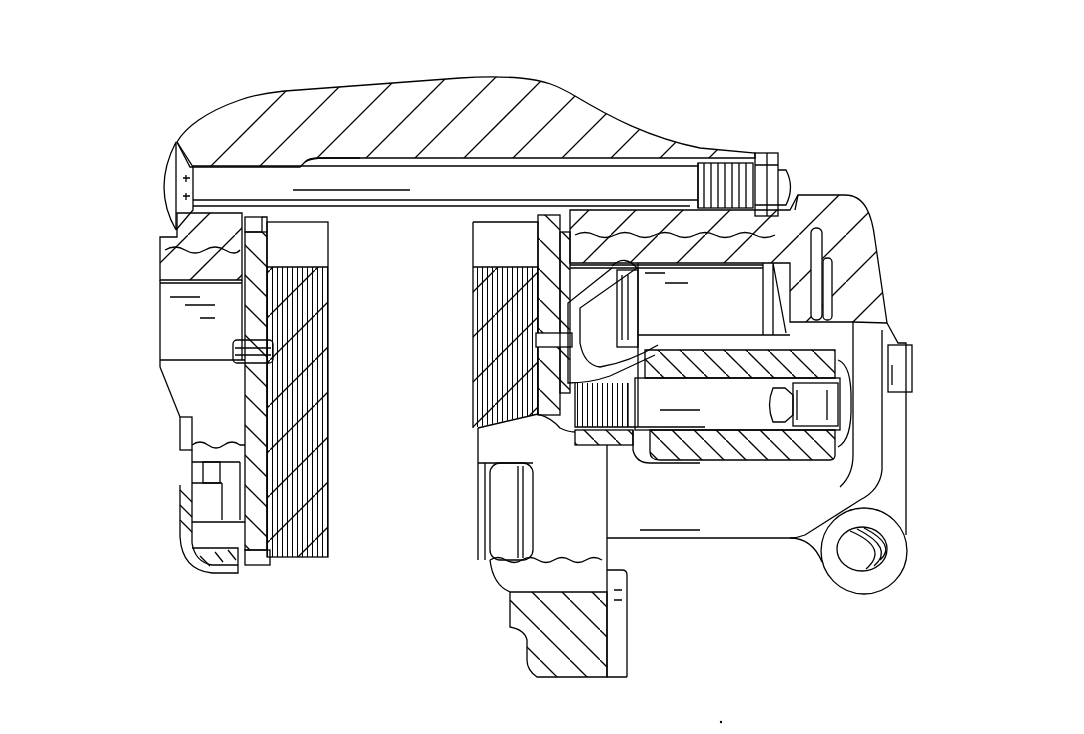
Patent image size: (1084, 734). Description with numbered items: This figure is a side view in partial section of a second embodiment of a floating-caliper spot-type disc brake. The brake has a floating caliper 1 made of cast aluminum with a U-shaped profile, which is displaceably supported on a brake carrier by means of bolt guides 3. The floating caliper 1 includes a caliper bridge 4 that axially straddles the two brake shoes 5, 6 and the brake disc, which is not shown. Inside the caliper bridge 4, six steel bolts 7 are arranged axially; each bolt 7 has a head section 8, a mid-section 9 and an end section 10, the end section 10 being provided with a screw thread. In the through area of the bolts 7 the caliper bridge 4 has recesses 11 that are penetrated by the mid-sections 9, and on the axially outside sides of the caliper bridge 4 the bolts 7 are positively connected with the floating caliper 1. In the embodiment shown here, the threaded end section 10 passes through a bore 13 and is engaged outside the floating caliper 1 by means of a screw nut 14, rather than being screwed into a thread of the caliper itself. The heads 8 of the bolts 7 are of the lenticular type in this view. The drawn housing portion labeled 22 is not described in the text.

The floating caliper 1 is at (590, 93).
The bolt guides 3 is at (765, 417).
The caliper bridge 4 is at (413, 105).
The brake shoe 5 is at (322, 314).
The brake shoe 6 is at (480, 312).
The steel bolts 7 is at (348, 207).
The head section 8 is at (180, 208).
The mid-section 9 is at (408, 197).
The end section 10 is at (796, 180).
The recesses 11 is at (352, 160).
The bore 13 is at (677, 157).
The screw nut 14 is at (768, 155).
The housing 22 is at (497, 616).